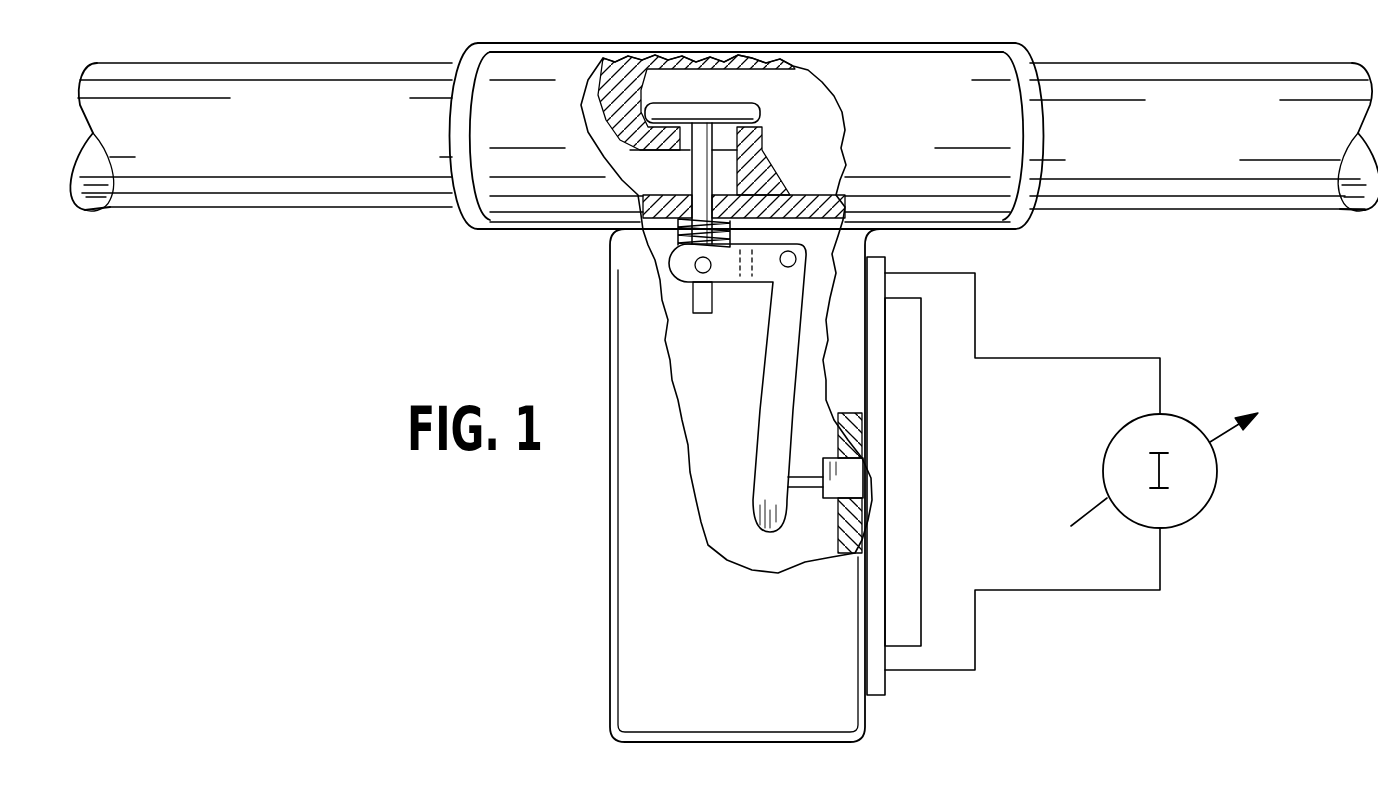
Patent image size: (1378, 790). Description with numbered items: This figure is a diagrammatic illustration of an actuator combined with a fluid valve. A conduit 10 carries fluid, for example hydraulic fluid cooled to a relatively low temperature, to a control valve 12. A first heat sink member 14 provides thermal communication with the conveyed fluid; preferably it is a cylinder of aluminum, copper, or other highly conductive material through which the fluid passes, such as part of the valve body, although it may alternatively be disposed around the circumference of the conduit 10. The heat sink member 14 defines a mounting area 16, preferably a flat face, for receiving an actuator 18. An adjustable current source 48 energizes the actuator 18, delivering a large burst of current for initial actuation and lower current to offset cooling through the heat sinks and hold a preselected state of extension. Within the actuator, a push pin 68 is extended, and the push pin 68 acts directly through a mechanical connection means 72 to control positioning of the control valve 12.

The conduit 10 is at (1163, 62).
The control valve 12 is at (596, 246).
The first heat sink member 14 is at (855, 517).
The mounting area 16 is at (880, 250).
The actuator 18 is at (931, 431).
The adjustable current source 48 is at (1207, 483).
The push pin 68 is at (808, 478).
The mechanical connection means 72 is at (780, 338).